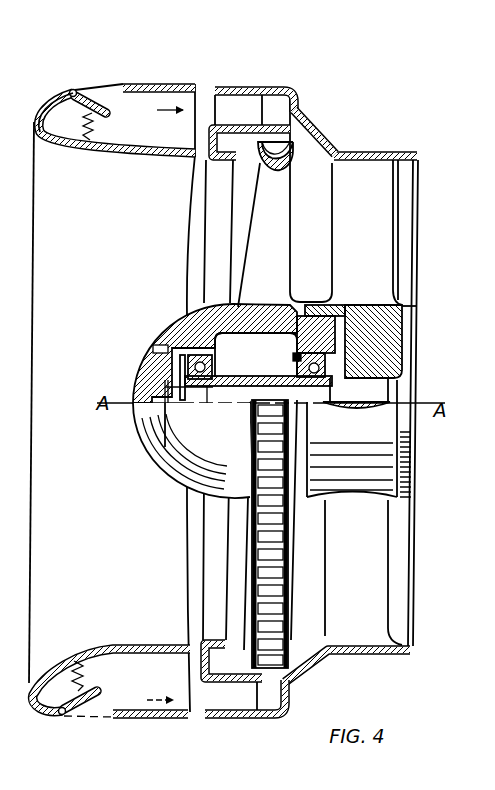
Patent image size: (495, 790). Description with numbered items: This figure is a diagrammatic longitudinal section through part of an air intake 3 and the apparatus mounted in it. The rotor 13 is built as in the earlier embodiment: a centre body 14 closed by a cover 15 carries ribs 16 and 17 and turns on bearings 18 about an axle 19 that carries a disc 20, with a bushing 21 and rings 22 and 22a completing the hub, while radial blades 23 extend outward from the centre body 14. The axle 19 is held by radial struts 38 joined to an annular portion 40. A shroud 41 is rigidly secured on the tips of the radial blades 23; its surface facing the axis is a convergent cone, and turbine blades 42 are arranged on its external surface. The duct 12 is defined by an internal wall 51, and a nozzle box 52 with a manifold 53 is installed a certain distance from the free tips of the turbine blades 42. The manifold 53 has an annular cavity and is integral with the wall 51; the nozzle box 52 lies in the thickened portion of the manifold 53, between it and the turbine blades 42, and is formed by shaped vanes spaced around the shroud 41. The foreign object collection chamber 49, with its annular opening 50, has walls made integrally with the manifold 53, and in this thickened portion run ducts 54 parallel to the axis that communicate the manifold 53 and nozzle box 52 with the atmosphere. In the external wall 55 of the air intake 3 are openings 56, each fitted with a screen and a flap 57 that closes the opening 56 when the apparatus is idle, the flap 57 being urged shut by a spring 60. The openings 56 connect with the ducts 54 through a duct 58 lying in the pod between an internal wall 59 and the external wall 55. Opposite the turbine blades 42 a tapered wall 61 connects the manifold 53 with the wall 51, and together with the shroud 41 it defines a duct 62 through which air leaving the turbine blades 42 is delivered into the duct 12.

The air intake 3 is at (152, 722).
The duct 12 is at (313, 617).
The rotor 13 is at (170, 470).
The centre body 14 is at (223, 312).
The cover 15 is at (136, 428).
The rib 16 is at (176, 340).
The rib 17 is at (340, 305).
The bearings 18 is at (290, 368).
The axle 19 is at (378, 395).
The disc 20 is at (407, 388).
The bushing 21 is at (280, 389).
The ring 22 is at (146, 373).
The ring 22a is at (294, 306).
The radial blades 23 is at (275, 256).
The radial struts 38 is at (383, 240).
The annular portion 40 is at (388, 327).
The shroud 41 is at (276, 166).
The turbine blades 42 is at (289, 147).
The foreign object collection chamber 49 is at (200, 661).
The annular opening 50 is at (292, 678).
The internal wall 51 is at (419, 170).
The nozzle box 52 is at (294, 115).
The manifold 53 is at (279, 103).
The ducts 54 is at (230, 103).
The external wall 55 is at (70, 96).
The openings 56 is at (100, 84).
The flap 57 is at (108, 110).
The duct 58 is at (148, 97).
The internal wall 59 is at (157, 158).
The spring 60 is at (93, 127).
The tapered wall 61 is at (330, 148).
The duct 62 is at (300, 156).